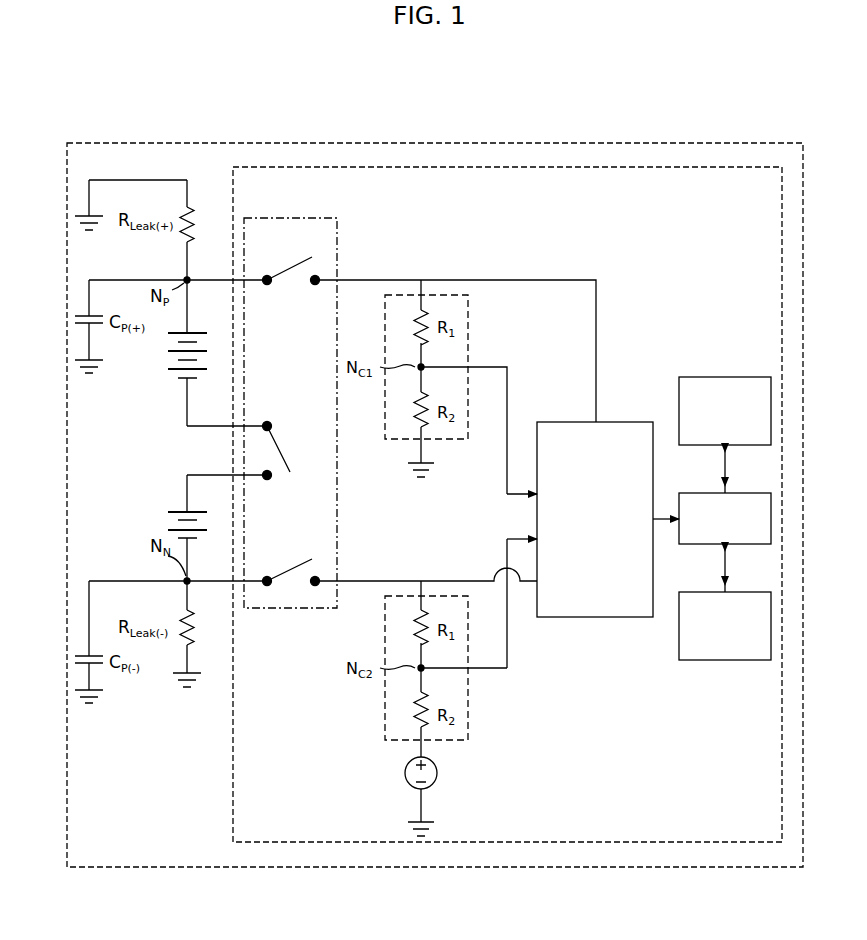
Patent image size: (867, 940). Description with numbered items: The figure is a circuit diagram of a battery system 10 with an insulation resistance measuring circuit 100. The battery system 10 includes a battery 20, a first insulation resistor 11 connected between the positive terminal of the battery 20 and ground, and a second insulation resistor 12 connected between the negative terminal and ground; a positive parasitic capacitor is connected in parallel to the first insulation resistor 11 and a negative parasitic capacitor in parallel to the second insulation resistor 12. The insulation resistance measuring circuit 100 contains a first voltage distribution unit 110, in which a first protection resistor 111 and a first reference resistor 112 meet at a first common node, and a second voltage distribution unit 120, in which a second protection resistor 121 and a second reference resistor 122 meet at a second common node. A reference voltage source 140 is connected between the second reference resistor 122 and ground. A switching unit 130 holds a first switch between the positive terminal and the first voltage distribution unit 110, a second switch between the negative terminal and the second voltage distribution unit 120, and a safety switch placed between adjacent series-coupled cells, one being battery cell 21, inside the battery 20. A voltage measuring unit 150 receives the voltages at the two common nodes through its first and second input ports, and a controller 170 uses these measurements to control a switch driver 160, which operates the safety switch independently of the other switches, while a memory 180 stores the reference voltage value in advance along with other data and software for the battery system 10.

The battery system 10 is at (520, 143).
The insulation resistance measuring circuit 100 is at (613, 167).
The first insulation resistor 11 is at (191, 210).
The second insulation resistor 12 is at (194, 632).
The battery 20 is at (154, 376).
The battery cell 21 is at (165, 513).
The first voltage distribution unit 110 is at (470, 318).
The first protection resistor 111 is at (409, 331).
The first reference resistor 112 is at (409, 417).
The second voltage distribution unit 120 is at (470, 695).
The second protection resistor 121 is at (409, 634).
The second reference resistor 122 is at (409, 720).
The switching unit 130 is at (287, 218).
The reference voltage source 140 is at (405, 773).
The voltage measuring unit 150 is at (622, 422).
The switch driver 160 is at (722, 377).
The controller 170 is at (750, 493).
The memory 180 is at (726, 661).